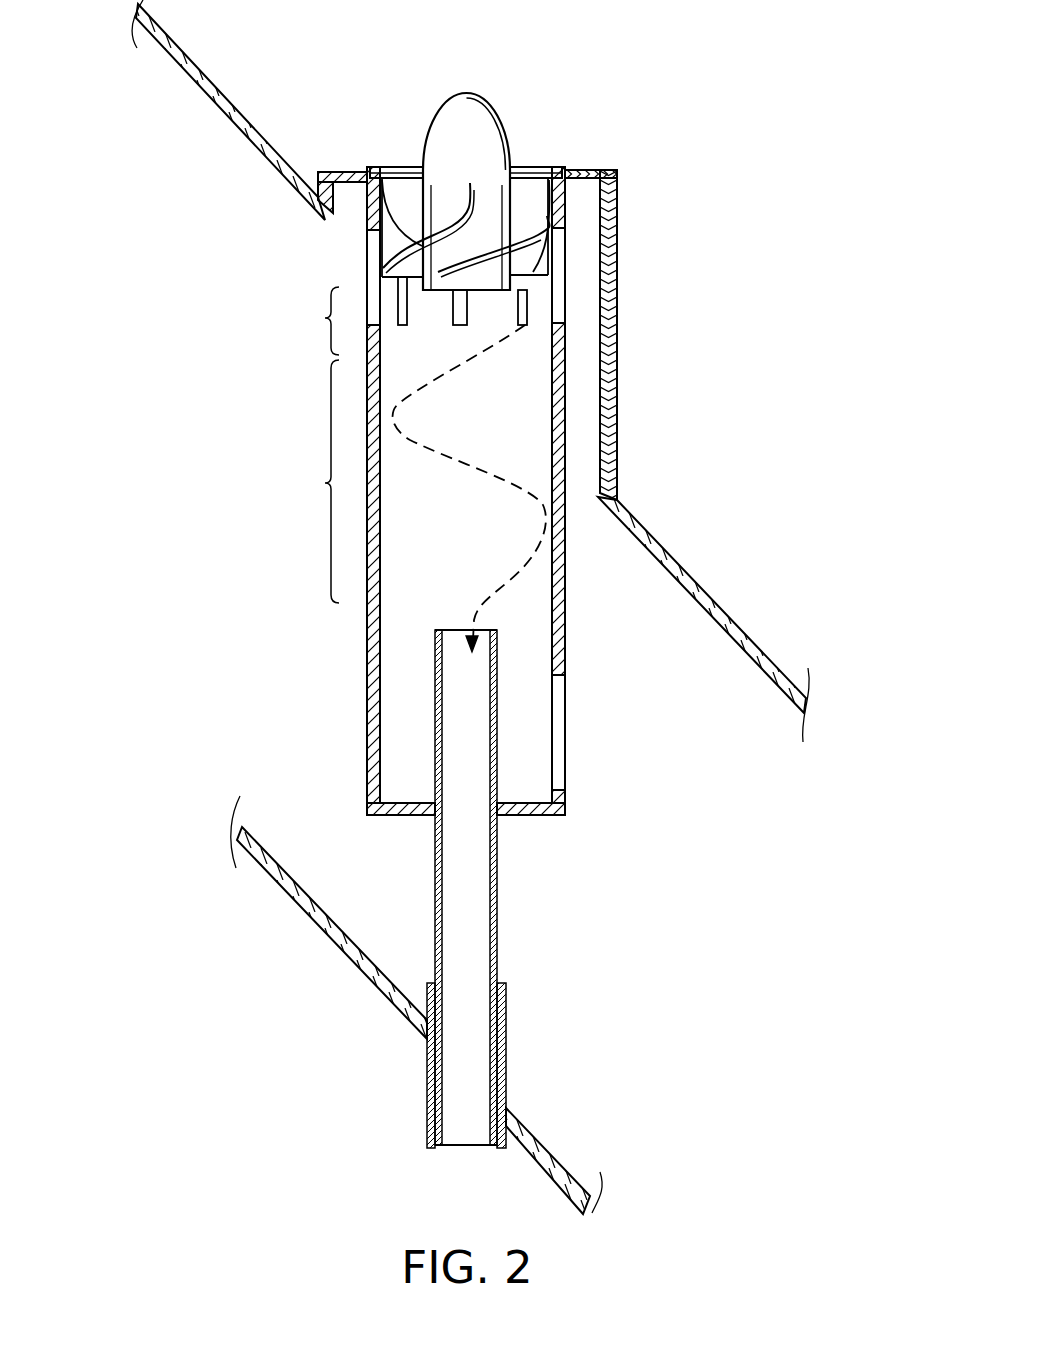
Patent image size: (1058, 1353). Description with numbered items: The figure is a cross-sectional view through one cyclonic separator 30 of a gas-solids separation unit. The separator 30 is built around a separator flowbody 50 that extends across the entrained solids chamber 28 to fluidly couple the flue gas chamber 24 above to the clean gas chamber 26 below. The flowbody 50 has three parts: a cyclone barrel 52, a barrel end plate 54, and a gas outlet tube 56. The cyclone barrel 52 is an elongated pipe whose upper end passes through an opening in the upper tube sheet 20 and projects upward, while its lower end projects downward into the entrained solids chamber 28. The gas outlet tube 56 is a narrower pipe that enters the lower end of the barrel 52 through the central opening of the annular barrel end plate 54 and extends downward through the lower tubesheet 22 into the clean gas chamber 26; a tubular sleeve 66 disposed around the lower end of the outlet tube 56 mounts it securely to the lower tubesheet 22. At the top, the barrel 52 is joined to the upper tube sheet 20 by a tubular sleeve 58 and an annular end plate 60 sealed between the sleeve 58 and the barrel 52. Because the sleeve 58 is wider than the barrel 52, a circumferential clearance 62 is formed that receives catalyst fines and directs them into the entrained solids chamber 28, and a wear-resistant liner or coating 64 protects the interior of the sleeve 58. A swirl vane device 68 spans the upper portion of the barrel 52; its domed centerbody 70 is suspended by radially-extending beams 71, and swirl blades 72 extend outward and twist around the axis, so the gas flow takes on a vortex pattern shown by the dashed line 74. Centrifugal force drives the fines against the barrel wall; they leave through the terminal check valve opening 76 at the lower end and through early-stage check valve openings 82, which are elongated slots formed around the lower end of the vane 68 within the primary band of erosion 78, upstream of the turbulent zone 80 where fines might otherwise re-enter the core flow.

The upper tube sheet 20 is at (705, 596).
The lower tubesheet 22 is at (550, 1152).
The flue gas chamber 24 is at (192, 34).
The clean gas chamber 26 is at (249, 939).
The entrained solids chamber 28 is at (159, 126).
The cyclonic separator 30 is at (716, 52).
The separator flowbody 50 is at (363, 202).
The cyclone barrel 52 is at (567, 660).
The barrel end plate 54 is at (400, 816).
The gas outlet tube 56 is at (498, 887).
The tubular sleeve 58 is at (620, 196).
The annular end plate 60 is at (605, 169).
The circumferential clearance 62 is at (585, 420).
The wear-resistant liner or coating 64 is at (610, 335).
The tubular sleeve 66 is at (507, 1063).
The swirl vane device 68 is at (464, 190).
The domed centerbody 70 is at (450, 96).
The radially-extending beams 71 is at (412, 162).
The swirl blades 72 is at (378, 170).
The dashed line 74 is at (452, 456).
The terminal check valve opening 76 is at (567, 742).
The primary band of erosion 78 is at (312, 321).
The turbulent zone 80 is at (312, 481).
The early-stage check valve openings 82 is at (365, 245).